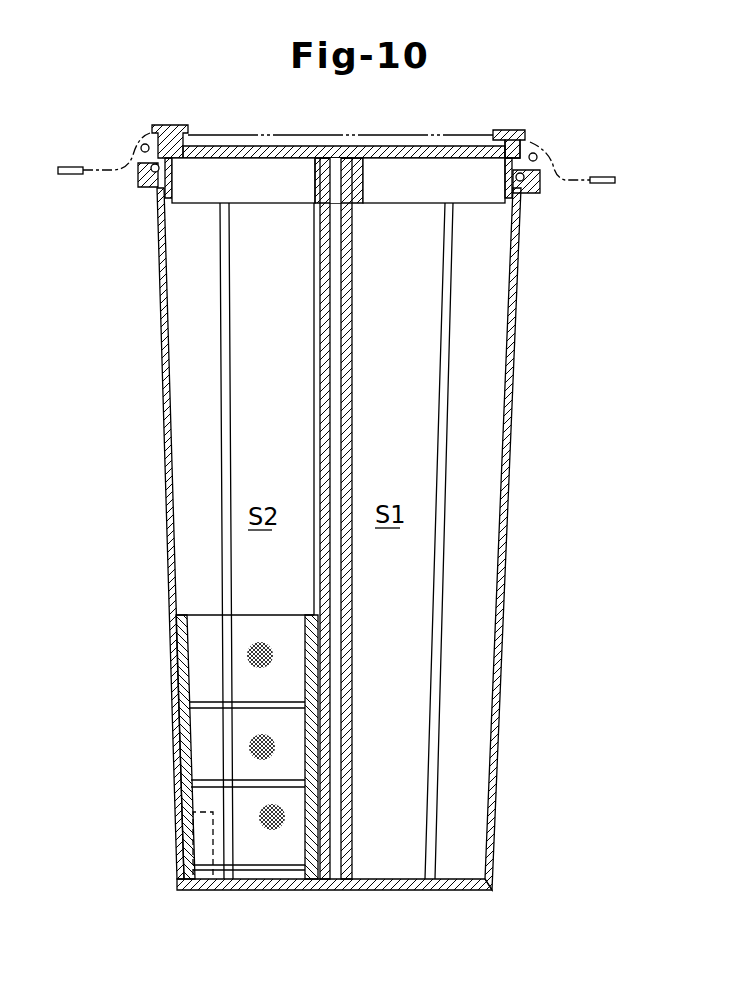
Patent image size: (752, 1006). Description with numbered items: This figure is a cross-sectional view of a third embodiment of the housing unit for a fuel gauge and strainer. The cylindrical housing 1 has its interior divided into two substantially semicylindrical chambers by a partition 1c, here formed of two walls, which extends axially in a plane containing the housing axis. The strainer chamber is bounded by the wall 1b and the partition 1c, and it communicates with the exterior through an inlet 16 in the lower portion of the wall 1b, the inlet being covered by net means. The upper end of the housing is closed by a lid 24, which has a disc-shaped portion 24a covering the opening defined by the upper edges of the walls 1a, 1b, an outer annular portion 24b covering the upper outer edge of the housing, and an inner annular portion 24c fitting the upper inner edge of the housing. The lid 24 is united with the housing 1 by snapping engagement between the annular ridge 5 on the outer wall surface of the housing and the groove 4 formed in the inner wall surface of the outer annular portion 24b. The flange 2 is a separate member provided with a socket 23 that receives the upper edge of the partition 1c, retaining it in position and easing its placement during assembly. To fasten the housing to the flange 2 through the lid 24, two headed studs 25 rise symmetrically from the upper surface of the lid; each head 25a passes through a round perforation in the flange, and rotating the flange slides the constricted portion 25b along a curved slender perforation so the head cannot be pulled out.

The housing 1 is at (322, 539).
The wall 1a is at (497, 560).
The wall 1b is at (165, 513).
The partition 1c is at (353, 285).
The flange 2 is at (247, 123).
The groove 4 is at (537, 187).
The annular ridge 5 is at (520, 190).
The inlet 16 is at (205, 837).
The socket 23 is at (355, 182).
The lid 24 is at (238, 170).
The disc-shaped portion 24a is at (275, 152).
The outer annular portion 24b is at (140, 170).
The inner annular portion 24c is at (168, 183).
The headed stud 25 is at (531, 126).
The head 25a is at (505, 146).
The constricted portion 25b is at (500, 142).